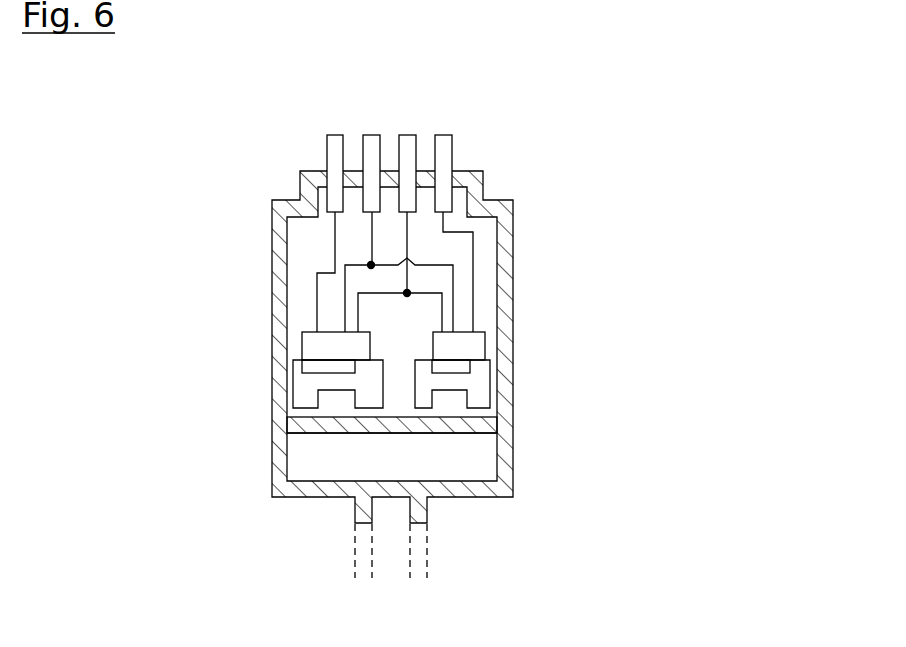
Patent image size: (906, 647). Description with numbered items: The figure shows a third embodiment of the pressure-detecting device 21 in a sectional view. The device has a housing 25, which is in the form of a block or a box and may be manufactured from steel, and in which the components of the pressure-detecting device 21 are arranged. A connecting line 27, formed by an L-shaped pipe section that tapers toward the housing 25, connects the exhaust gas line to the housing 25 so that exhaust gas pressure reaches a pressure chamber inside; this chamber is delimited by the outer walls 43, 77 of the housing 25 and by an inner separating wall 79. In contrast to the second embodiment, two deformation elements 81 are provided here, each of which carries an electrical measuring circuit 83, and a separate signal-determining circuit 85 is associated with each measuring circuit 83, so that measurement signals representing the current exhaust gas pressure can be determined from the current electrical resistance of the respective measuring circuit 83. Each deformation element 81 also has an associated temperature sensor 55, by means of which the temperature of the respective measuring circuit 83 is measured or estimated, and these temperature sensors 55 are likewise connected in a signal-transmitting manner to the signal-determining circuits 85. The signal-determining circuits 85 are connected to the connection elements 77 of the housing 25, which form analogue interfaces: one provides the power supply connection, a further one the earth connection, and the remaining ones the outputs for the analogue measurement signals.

The pressure-detecting device 21 is at (654, 149).
The housing 25 is at (512, 233).
The connecting line 27 is at (357, 550).
The outer wall 43 is at (507, 498).
The temperature sensor 55 is at (322, 348).
The connection elements 77 is at (327, 155).
The inner separating wall 79 is at (480, 435).
The deformation element 81 is at (318, 380).
The electrical measuring circuit 83 is at (335, 365).
The signal-determining circuit 85 is at (322, 345).